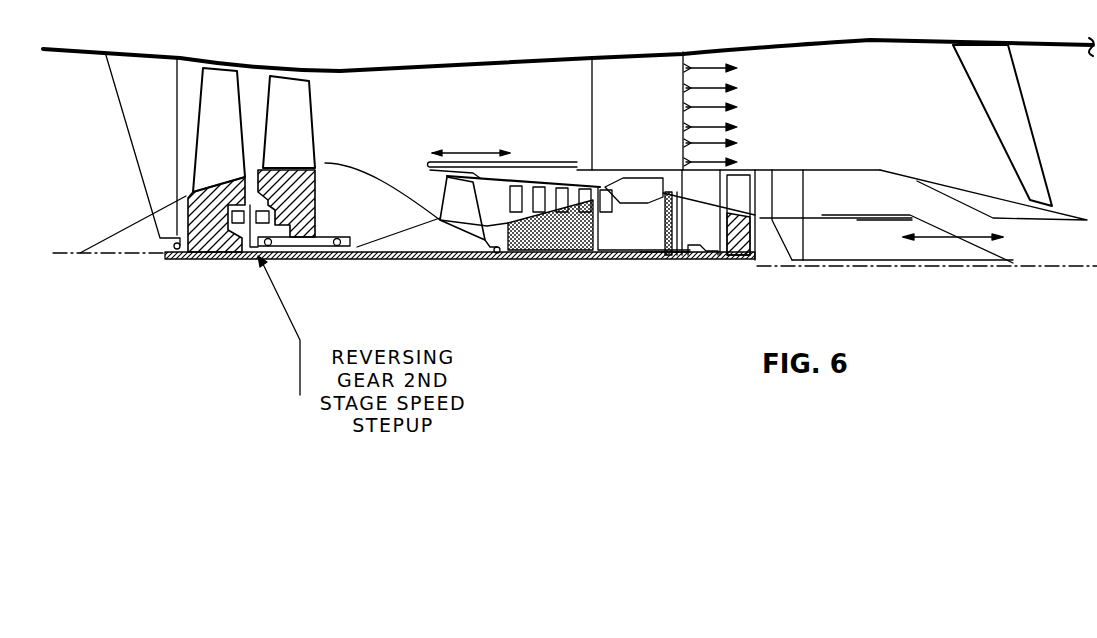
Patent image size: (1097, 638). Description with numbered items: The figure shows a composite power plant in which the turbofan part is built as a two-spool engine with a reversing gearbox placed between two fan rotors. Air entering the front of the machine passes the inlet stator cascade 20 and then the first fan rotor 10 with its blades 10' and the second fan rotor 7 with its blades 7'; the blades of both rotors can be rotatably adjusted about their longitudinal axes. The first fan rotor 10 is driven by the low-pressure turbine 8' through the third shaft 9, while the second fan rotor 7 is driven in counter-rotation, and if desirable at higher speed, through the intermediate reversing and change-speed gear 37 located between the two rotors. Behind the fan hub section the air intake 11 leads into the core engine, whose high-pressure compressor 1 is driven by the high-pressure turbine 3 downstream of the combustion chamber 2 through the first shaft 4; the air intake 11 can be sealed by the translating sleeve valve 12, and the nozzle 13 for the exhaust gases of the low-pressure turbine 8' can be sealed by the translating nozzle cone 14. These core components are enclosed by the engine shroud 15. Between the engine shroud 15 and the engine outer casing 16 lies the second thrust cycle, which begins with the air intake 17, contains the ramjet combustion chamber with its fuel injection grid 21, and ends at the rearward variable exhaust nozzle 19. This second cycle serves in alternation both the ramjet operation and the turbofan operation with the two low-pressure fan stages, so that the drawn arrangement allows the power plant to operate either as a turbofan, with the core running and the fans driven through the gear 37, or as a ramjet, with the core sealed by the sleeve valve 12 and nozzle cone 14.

The high-pressure compressor 1 is at (540, 246).
The combustion chamber 2 is at (633, 185).
The high-pressure turbine 3 is at (666, 252).
The first shaft 4 is at (620, 250).
The second fan rotor 7 is at (379, 235).
The second fan rotor blade 7' is at (289, 90).
The low-pressure turbine 8' is at (737, 239).
The third shaft 9 is at (437, 259).
The first fan rotor 10 is at (202, 239).
The first fan rotor blade 10' is at (219, 102).
The air intake 11 is at (430, 192).
The translating sleeve valve 12 is at (530, 160).
The nozzle 13 is at (957, 220).
The translating nozzle cone 14 is at (855, 215).
The engine shroud 15 is at (601, 168).
The engine outer casing 16 is at (538, 57).
The air intake 17 is at (80, 183).
The variable exhaust nozzle 19 is at (1089, 148).
The inlet stator cascade 20 is at (120, 96).
The fuel injection grid 21 is at (706, 50).
The reversing and change-speed gear 37 is at (235, 257).